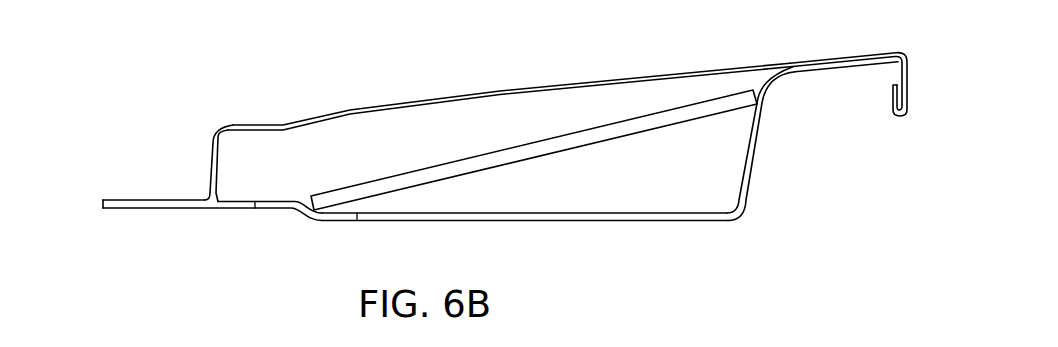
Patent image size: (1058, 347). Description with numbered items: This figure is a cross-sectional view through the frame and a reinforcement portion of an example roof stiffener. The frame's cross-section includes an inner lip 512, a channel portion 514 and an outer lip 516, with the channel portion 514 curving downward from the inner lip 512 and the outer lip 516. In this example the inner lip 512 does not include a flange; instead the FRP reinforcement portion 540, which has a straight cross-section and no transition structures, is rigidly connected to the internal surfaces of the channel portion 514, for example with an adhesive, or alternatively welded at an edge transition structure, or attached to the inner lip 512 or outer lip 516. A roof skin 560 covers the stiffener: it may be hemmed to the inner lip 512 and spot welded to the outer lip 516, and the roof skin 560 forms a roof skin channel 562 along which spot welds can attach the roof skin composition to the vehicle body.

The inner lip 512 is at (821, 70).
The channel portion 514 is at (523, 222).
The outer lip 516 is at (270, 209).
The FRP reinforcement portion 540 is at (612, 140).
The roof skin 560 is at (535, 87).
The roof skin channel 562 is at (175, 199).